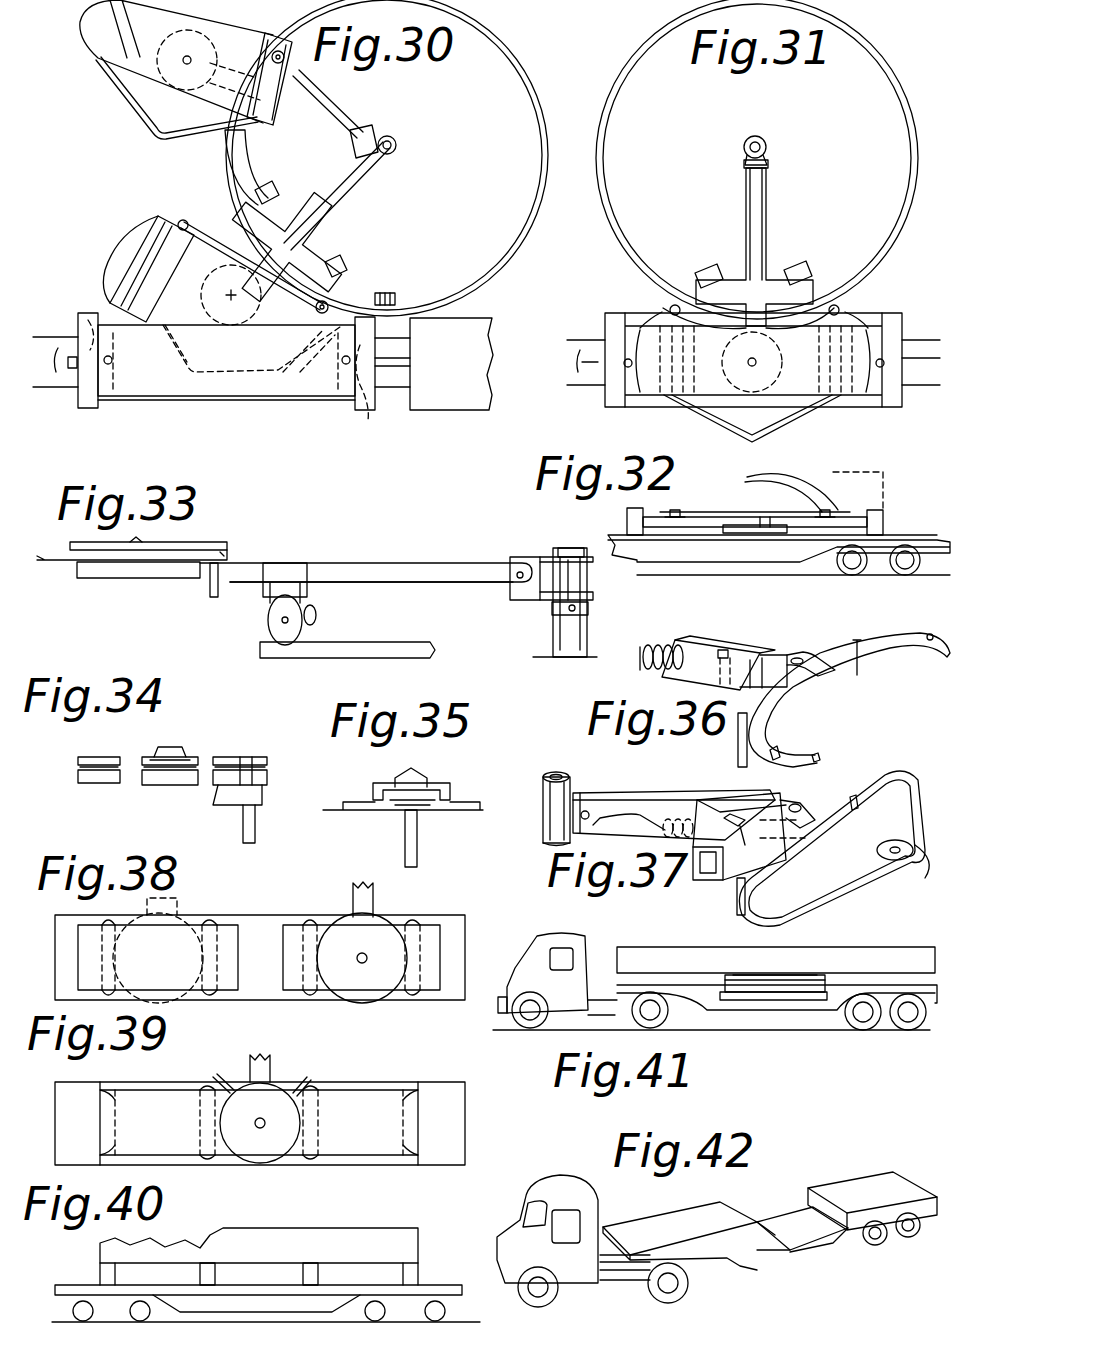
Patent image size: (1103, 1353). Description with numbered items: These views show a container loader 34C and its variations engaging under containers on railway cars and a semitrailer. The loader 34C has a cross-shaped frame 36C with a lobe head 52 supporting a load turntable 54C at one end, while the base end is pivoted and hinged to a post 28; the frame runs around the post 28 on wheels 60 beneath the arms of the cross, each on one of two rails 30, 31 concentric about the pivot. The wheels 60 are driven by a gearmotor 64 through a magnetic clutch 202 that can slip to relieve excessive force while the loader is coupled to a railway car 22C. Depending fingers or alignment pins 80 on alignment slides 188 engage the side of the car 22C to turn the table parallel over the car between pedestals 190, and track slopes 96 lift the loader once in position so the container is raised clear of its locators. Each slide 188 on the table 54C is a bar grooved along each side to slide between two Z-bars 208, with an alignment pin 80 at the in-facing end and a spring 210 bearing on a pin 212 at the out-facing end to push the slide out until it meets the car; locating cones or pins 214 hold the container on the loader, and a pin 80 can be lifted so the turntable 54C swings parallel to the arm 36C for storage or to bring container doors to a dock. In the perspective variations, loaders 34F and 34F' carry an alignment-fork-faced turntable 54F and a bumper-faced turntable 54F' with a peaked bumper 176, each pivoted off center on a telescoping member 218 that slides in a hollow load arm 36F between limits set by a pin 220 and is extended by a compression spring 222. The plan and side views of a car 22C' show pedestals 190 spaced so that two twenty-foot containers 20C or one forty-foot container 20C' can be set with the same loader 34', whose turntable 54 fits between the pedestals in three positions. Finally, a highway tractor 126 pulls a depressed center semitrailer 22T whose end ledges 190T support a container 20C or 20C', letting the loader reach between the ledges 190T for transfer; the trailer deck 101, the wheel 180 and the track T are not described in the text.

In FIG. 30, the container 20C is at (226, 388).
In FIG. 31, the container 20C is at (753, 380).
In FIG. 32, the container 20C is at (792, 502).
In FIG. 38, the container 20C is at (259, 980).
In FIG. 37, the forty-foot container 20C' is at (673, 931).
In FIG. 39, the forty-foot container 20C' is at (268, 1108).
In FIG. 40, the forty-foot container 20C' is at (293, 1241).
In FIG. 41, the forty-foot container 20C' is at (776, 944).
In FIG. 30, the railway car 22C is at (226, 387).
In FIG. 31, the railway car 22C is at (779, 380).
In FIG. 32, the railway car 22C is at (791, 540).
In FIG. 38, the railway car 22C' is at (260, 937).
In FIG. 39, the railway car 22C' is at (260, 1105).
In FIG. 40, the railway car 22C' is at (254, 1282).
In FIG. 41, the depressed center semitrailer 22T is at (845, 1025).
In FIG. 42, the depressed center semitrailer 22T is at (730, 1275).
In FIG. 30, the post 28 is at (397, 143).
In FIG. 31, the post 28 is at (766, 140).
In FIG. 33, the post 28 is at (562, 545).
In FIG. 37, the post 28 is at (560, 778).
In FIG. 30, the rail 30 is at (530, 91).
In FIG. 30, the rail 31 is at (530, 121).
In FIG. 30, the loader 34C is at (352, 200).
In FIG. 31, the loader 34C is at (770, 205).
In FIG. 33, the loader 34C is at (378, 562).
In FIG. 36, the loader 34F is at (704, 645).
In FIG. 37, the loader 34F' is at (674, 802).
In FIG. 38, the loader 34' is at (288, 898).
In FIG. 39, the loader 34' is at (265, 1074).
In FIG. 30, the cross-shaped frame 36C is at (340, 212).
In FIG. 31, the cross-shaped frame 36C is at (744, 204).
In FIG. 33, the cross-shaped frame 36C is at (368, 585).
In FIG. 36, the hollow load arm 36F is at (700, 645).
In FIG. 37, the hollow load arm 36F is at (722, 815).
In FIG. 30, the lobe head 52 is at (237, 265).
In FIG. 33, the lobe head 52 is at (80, 580).
In FIG. 39, the load turntable 54 is at (275, 1160).
In FIG. 30, the load turntable 54C is at (148, 245).
In FIG. 33, the load turntable 54C is at (218, 540).
In FIG. 41, the load turntable 54C is at (740, 993).
In FIG. 36, the alignment fork faced turntable 54F is at (849, 700).
In FIG. 37, the bumper faced turntable 54F' is at (832, 848).
In FIG. 33, the wheels 60 is at (270, 640).
In FIG. 30, the gearmotor 64 is at (270, 188).
In FIG. 31, the gearmotor 64 is at (712, 268).
In FIG. 30, the alignment pin 80 is at (183, 220).
In FIG. 31, the alignment pin 80 is at (670, 306).
In FIG. 34, the alignment pin 80 is at (243, 826).
In FIG. 35, the alignment pin 80 is at (420, 846).
In FIG. 36, the alignment pin 80 is at (862, 686).
In FIG. 37, the alignment pin 80 is at (757, 888).
In FIG. 30, the track slopes 96 is at (395, 297).
In FIG. 42, the lower deck 101 is at (778, 1218).
In FIG. 41, the highway tractor 126 is at (612, 1030).
In FIG. 42, the highway tractor 126 is at (578, 1158).
In FIG. 37, the peaked bumper 176 is at (893, 889).
In FIG. 37, the wheel 180 is at (870, 870).
In FIG. 30, the alignment slide 188 is at (155, 220).
In FIG. 31, the alignment slide 188 is at (835, 305).
In FIG. 32, the alignment slide 188 is at (685, 512).
In FIG. 34, the alignment slide 188 is at (88, 760).
In FIG. 35, the alignment slide 188 is at (440, 786).
In FIG. 30, the pedestals 190 is at (106, 408).
In FIG. 31, the pedestals 190 is at (638, 322).
In FIG. 38, the pedestals 190 is at (205, 958).
In FIG. 39, the pedestals 190 is at (198, 1125).
In FIG. 40, the pedestals 190 is at (208, 1262).
In FIG. 41, the end ledges 190T is at (781, 1030).
In FIG. 42, the end ledges 190T is at (845, 1235).
In FIG. 30, the magnetic clutch 202 is at (338, 272).
In FIG. 34, the Z-bars 208 is at (142, 778).
In FIG. 35, the Z-bars 208 is at (360, 808).
In FIG. 36, the spring 210 is at (644, 655).
In FIG. 37, the spring 210 is at (680, 880).
In FIG. 37, the pin 212 is at (655, 830).
In FIG. 30, the locating cones or pins 214 is at (80, 335).
In FIG. 32, the locating cones or pins 214 is at (678, 512).
In FIG. 34, the locating cones or pins 214 is at (178, 748).
In FIG. 35, the locating cones or pins 214 is at (420, 772).
In FIG. 36, the telescoping member 218 is at (783, 658).
In FIG. 37, the telescoping member 218 is at (790, 802).
In FIG. 36, the pin 220 is at (735, 650).
In FIG. 37, the pin 220 is at (745, 865).
In FIG. 36, the compression spring 222 is at (624, 671).
In FIG. 30, the track T is at (221, 362).
In FIG. 31, the track T is at (746, 362).